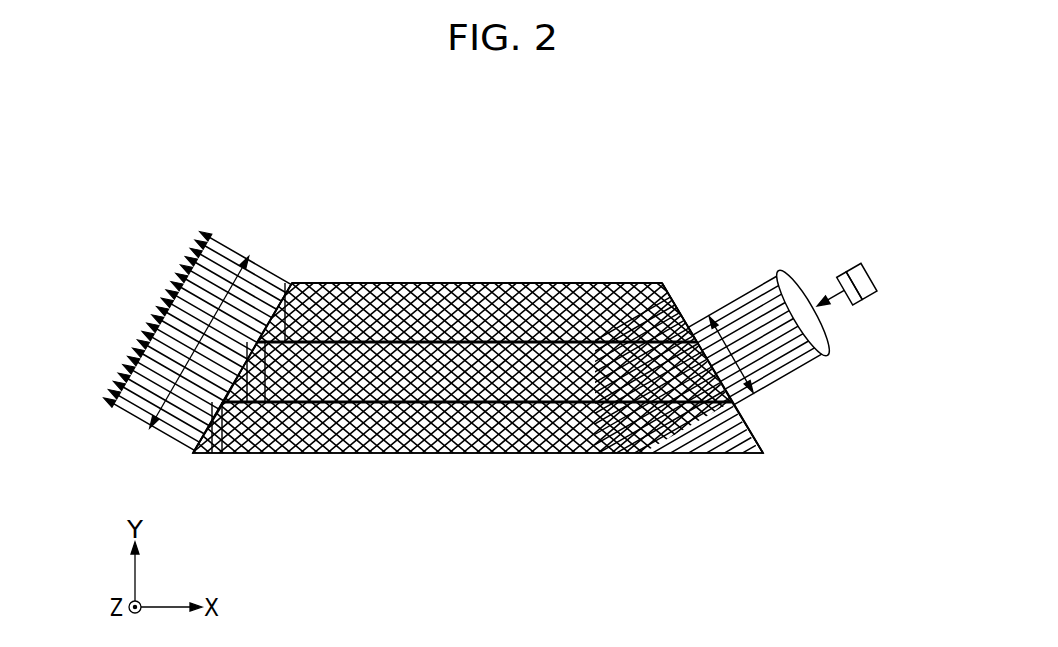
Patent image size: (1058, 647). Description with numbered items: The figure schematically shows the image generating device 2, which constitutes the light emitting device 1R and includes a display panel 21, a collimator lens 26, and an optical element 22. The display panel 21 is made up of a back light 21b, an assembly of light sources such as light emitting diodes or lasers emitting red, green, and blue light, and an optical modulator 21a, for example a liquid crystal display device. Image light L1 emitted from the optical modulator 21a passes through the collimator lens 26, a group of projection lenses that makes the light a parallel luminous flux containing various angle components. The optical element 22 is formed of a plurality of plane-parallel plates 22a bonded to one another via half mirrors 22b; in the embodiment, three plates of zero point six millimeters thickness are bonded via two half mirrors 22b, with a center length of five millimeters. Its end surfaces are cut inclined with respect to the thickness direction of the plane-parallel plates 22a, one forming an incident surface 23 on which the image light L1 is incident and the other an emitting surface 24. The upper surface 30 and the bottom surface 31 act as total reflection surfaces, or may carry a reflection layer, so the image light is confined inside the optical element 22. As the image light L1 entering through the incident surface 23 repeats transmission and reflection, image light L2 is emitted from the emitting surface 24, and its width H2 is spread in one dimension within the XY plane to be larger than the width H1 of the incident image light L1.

The image generating device 2 is at (512, 323).
The light emitting device 1R is at (690, 158).
The display panel 21 is at (912, 197).
The optical modulator 21a is at (845, 280).
The back light 21b is at (867, 282).
The optical element 22 is at (652, 207).
The plane-parallel plates 22a is at (548, 283).
The half mirrors 22b is at (621, 342).
The incident surface 23 is at (684, 296).
The emitting surface 24 is at (272, 296).
The collimator lens 26 is at (832, 336).
The upper surface 30 is at (477, 283).
The bottom surface 31 is at (562, 454).
The image light L1 is at (822, 300).
The image light L2 is at (188, 336).
The width of image light L1 H1 is at (737, 285).
The width of image light L2 H2 is at (223, 277).